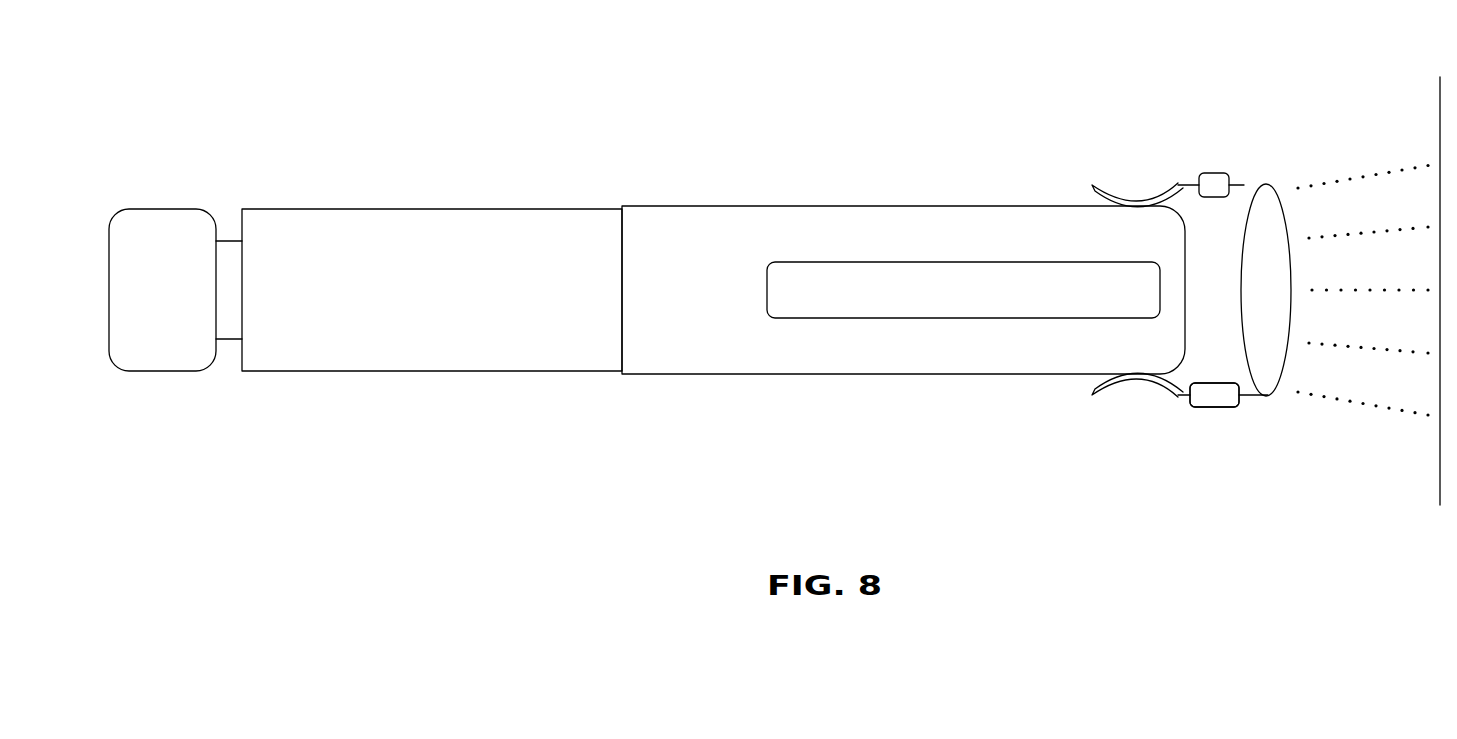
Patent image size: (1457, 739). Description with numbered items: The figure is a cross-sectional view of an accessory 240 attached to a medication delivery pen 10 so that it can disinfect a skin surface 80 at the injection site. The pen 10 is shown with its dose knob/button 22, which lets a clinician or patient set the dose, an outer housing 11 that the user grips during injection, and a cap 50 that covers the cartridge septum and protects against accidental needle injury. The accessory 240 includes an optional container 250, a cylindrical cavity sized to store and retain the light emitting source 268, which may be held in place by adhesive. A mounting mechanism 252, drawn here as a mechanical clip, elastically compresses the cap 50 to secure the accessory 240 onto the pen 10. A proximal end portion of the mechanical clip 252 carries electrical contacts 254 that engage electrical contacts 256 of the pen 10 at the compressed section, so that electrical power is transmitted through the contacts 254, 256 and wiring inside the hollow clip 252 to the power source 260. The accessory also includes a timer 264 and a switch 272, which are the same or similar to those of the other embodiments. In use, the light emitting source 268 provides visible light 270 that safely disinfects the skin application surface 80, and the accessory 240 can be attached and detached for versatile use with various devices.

The medication delivery pen 10 is at (336, 98).
The dose knob/button 22 is at (161, 209).
The housing 11 is at (407, 372).
The cap 50 is at (857, 206).
The skin surface 80 is at (1440, 112).
The accessory 240 is at (1313, 449).
The container 250 is at (1242, 197).
The mounting mechanism 252 is at (1197, 187).
The electrical contacts 254 is at (1138, 380).
The electrical contacts 256 is at (1137, 197).
The power source 260 is at (1213, 407).
The timer 264 is at (1213, 407).
The light emitting source 268 is at (1281, 197).
The visible light 270 is at (1388, 408).
The switch 272 is at (1212, 173).